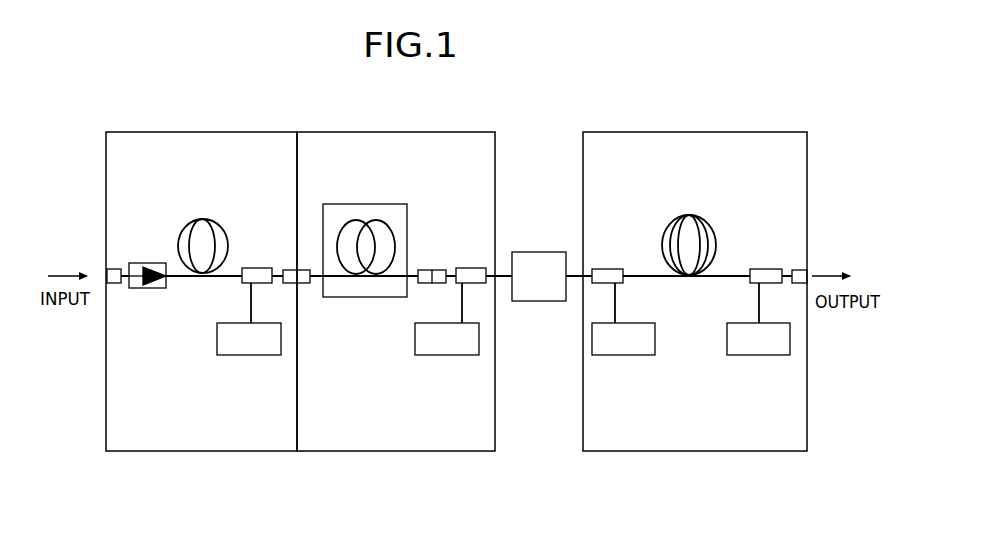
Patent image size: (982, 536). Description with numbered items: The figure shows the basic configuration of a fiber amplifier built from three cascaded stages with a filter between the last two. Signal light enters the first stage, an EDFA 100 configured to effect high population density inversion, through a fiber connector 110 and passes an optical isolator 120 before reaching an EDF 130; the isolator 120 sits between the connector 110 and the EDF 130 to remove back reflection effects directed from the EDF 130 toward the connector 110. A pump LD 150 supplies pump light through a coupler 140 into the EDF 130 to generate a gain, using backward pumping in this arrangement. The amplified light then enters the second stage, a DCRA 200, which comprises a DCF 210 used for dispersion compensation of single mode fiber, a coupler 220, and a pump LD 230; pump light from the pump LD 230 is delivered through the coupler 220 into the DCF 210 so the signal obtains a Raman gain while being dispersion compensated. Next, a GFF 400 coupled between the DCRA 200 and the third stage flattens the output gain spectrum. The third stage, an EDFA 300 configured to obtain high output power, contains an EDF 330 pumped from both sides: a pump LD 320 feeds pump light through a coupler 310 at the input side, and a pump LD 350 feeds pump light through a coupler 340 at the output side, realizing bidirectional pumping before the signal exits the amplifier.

The EDFA 100 is at (199, 454).
The fiber connector 110 is at (107, 267).
The optical isolator 120 is at (148, 290).
The EDF 130 is at (186, 214).
The coupler 140 is at (254, 266).
The pump LD 150 is at (214, 343).
The DCRA 200 is at (417, 454).
The DCF 210 is at (365, 204).
The coupler 220 is at (463, 266).
The pump LD 230 is at (413, 344).
The EDFA 300 is at (706, 454).
The coupler 310 is at (607, 267).
The pump LD 320 is at (588, 347).
The EDF 330 is at (679, 212).
The coupler 340 is at (763, 267).
The pump LD 350 is at (724, 345).
The GFF 400 is at (538, 250).